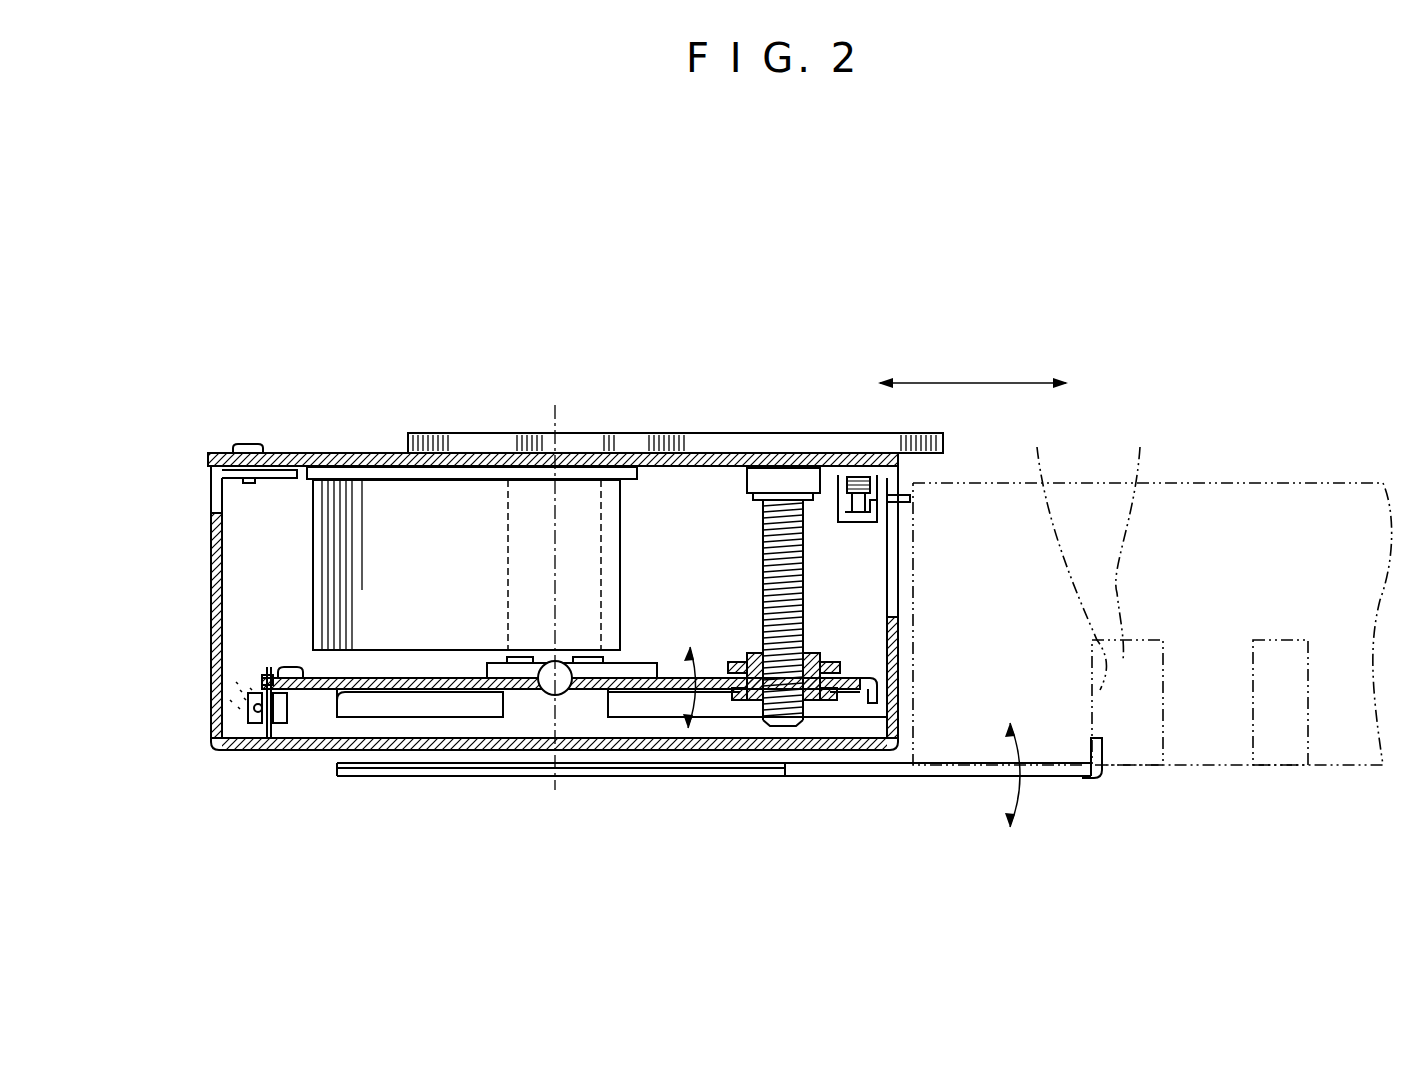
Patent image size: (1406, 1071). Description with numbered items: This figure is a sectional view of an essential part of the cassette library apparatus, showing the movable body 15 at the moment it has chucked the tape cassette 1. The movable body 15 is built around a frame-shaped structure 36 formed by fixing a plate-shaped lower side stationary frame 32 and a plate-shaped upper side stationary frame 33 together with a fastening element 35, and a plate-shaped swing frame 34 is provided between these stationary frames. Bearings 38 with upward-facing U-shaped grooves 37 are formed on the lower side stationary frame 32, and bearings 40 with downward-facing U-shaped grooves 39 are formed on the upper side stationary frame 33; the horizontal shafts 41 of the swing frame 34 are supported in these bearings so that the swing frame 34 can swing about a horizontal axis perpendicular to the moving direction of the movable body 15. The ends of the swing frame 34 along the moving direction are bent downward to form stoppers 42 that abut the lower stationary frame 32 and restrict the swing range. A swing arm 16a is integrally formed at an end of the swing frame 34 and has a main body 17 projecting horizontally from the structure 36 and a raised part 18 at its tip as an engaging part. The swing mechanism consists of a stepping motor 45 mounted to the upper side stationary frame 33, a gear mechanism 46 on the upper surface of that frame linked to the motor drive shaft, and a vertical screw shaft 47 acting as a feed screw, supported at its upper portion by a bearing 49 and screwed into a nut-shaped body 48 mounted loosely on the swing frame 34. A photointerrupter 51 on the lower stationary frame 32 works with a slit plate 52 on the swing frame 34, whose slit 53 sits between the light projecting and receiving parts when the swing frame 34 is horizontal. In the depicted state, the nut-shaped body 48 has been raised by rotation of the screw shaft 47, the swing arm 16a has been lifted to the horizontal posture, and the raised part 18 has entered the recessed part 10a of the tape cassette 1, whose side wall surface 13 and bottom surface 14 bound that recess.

The tape cassette 1 is at (1210, 466).
The recessed part 10a is at (1138, 541).
The side wall surface 13 is at (1064, 556).
The bottom surface 14 is at (1150, 687).
The movable body 15 is at (460, 385).
The swing arm 16a is at (947, 785).
The main body 17 is at (1053, 780).
The raised part 18 is at (1105, 748).
The lower side stationary frame 32 is at (290, 752).
The upper side stationary frame 33 is at (322, 452).
The swing frame 34 is at (385, 676).
The fastening element 35 is at (256, 446).
The structure 36 is at (205, 672).
The U-shaped groove 37 is at (540, 668).
The bearing 38 is at (510, 700).
The U-shaped groove 39 is at (566, 694).
The bearing 40 is at (601, 540).
The shaft 41 is at (552, 697).
The stopper 42 is at (240, 690).
The stepping motor 45 is at (470, 500).
The gear mechanism 46 is at (710, 420).
The screw shaft 47 is at (762, 585).
The nut-shaped body 48 is at (758, 700).
The bearing 49 is at (780, 490).
The photointerrupter 51 is at (262, 690).
The slit plate 52 is at (265, 748).
The slit 53 is at (283, 707).